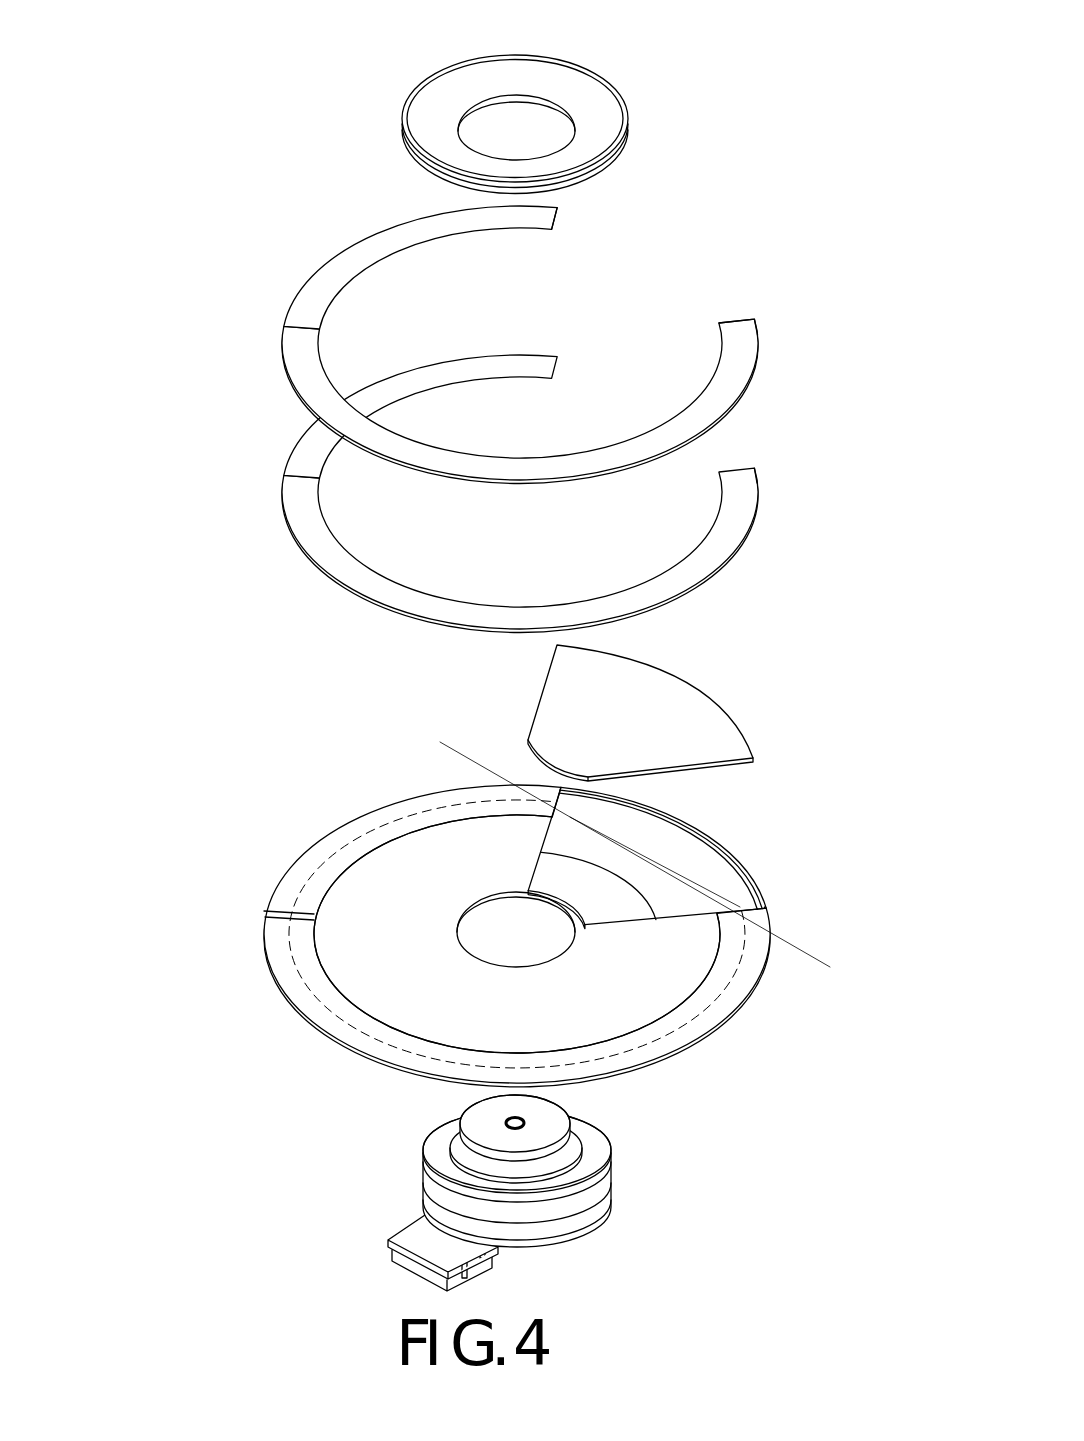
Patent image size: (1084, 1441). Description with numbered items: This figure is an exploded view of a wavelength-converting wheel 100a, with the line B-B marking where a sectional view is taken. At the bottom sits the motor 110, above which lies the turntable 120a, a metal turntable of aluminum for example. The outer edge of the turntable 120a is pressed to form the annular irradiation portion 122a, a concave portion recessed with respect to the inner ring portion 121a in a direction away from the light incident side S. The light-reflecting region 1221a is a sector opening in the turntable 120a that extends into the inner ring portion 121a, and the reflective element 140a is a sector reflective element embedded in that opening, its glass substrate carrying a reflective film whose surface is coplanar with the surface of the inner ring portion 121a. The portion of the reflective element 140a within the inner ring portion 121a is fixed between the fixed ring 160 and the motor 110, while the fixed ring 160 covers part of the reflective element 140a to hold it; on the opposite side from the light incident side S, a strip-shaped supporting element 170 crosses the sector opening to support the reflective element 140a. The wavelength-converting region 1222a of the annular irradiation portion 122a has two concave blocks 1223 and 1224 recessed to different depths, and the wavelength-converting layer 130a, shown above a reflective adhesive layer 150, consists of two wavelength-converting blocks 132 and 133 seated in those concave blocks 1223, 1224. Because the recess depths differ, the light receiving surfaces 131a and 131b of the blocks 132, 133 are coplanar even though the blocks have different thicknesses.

The wavelength-converting wheel 100a is at (275, 31).
The light incident side S is at (338, 173).
The fixed ring 160 is at (583, 78).
The reflective adhesive layer 150 is at (307, 498).
The wavelength-converting layer 130a is at (175, 282).
The light receiving surface 131a is at (333, 258).
The light receiving surface 131b is at (742, 370).
The wavelength-converting block 132 is at (303, 297).
The wavelength-converting block 133 is at (300, 350).
The reflective element 140a is at (652, 688).
The turntable 120a is at (326, 1071).
The annular irradiation portion 122a is at (272, 964).
The inner ring portion 121a is at (329, 1001).
The wavelength-converting region 1222a is at (200, 695).
The concave block 1223 is at (387, 819).
The concave block 1224 is at (293, 920).
The light-reflecting region 1221a is at (714, 856).
The strip-shaped supporting element 170 is at (627, 905).
The line B- B is at (810, 965).
The motor 110 is at (577, 1212).